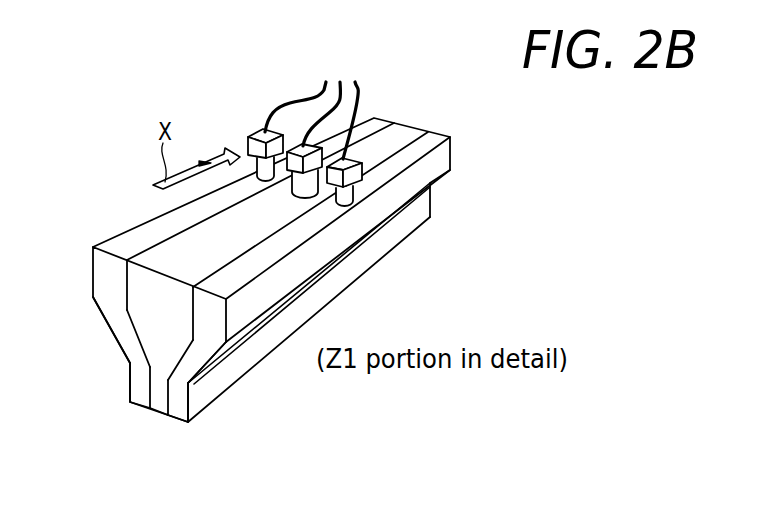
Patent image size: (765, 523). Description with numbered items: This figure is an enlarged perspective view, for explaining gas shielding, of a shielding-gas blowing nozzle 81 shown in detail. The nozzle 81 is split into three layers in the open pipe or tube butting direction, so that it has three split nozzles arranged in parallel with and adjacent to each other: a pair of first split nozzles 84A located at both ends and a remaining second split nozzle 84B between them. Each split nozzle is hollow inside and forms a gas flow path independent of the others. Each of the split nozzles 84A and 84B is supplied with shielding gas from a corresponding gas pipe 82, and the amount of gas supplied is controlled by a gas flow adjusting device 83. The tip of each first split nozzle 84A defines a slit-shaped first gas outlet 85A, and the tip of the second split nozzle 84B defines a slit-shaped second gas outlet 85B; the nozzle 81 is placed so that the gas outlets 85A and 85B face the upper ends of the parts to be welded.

The shielding-gas blowing nozzle 81 is at (113, 220).
The gas pipe 82 is at (315, 78).
The gas flow adjusting device 83 is at (379, 157).
The first split nozzle 84A is at (118, 317).
The second split nozzle 84B is at (158, 340).
The first gas outlet 85A is at (137, 405).
The second gas outlet 85B is at (155, 416).